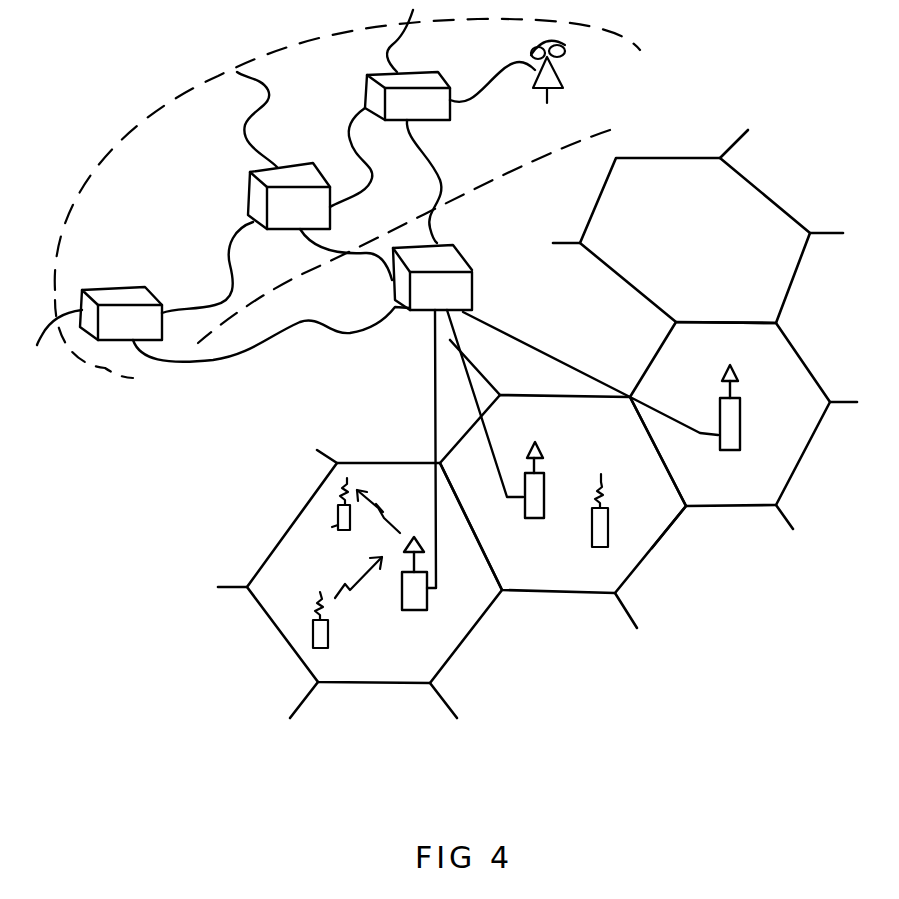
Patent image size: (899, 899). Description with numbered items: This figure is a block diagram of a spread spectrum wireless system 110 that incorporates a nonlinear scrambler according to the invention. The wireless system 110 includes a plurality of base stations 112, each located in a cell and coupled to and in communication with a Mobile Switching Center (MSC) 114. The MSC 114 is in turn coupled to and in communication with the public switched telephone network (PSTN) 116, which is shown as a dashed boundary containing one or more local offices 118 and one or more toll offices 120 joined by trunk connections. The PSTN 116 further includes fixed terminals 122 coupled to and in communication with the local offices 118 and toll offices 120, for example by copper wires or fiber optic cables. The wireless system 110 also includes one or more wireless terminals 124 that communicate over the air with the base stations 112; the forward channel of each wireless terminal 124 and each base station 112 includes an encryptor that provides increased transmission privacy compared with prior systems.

The wireless system 110 is at (172, 483).
The base station 112 is at (414, 610).
The Mobile Switching Center (MSC) 114 is at (472, 290).
The public switched telephone network (PSTN) 116 is at (630, 114).
The local office 118 is at (443, 120).
The toll office 120 is at (248, 195).
The fixed terminal 122 is at (547, 87).
The wireless terminal 124 is at (625, 527).